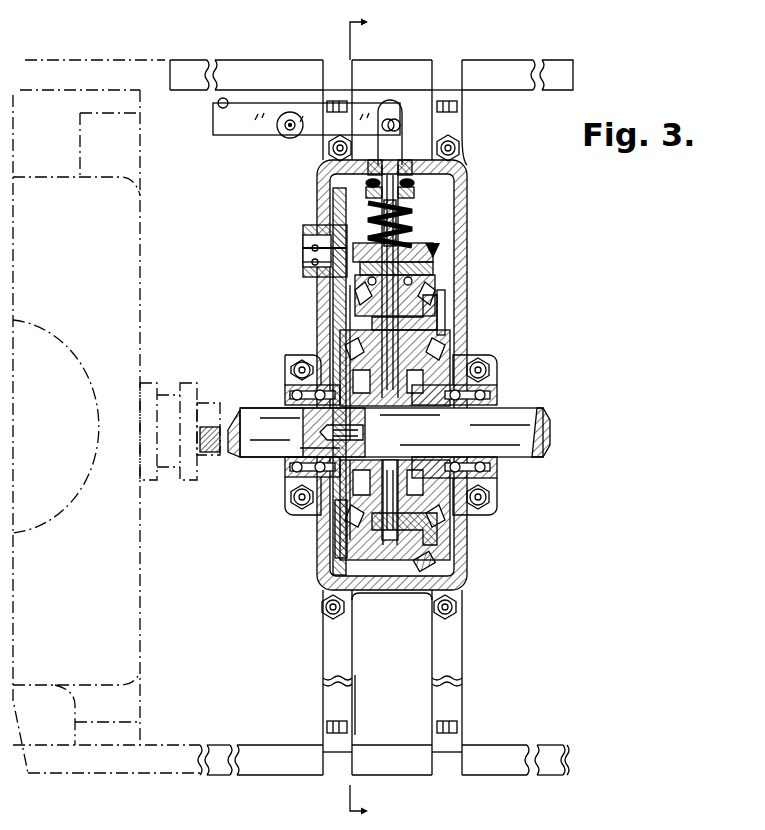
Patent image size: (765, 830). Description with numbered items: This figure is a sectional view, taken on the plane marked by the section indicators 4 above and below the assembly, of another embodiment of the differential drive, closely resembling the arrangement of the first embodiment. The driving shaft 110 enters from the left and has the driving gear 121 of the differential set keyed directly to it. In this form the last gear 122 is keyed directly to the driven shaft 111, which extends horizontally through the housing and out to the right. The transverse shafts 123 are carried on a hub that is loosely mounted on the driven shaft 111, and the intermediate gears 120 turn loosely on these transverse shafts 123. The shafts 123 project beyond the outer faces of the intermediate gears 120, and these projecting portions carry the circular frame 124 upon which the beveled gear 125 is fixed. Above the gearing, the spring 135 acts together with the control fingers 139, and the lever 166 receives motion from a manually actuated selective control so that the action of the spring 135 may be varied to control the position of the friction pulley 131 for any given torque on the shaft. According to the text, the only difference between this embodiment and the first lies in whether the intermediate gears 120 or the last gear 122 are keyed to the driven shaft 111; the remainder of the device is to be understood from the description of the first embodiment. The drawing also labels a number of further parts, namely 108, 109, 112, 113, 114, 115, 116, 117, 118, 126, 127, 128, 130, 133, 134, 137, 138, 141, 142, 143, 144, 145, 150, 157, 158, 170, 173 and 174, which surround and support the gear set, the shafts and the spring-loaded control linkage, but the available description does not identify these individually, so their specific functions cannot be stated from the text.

The section line 4- 4 is at (368, 418).
The machine frame 108 is at (136, 542).
The shaft end 109 is at (210, 455).
The driving shaft 110 is at (262, 458).
The driven shaft 111 is at (548, 432).
The ball bearing 112 is at (492, 397).
The gear housing 113 is at (495, 490).
The bolt 114 is at (499, 372).
The bracket 115 is at (455, 650).
The frame rail 116 is at (222, 84).
The ball bearing 117 is at (287, 398).
The bolt 118 is at (452, 107).
The intermediate gear 120 is at (313, 567).
The driving gear 121 is at (318, 513).
The last gear 122 is at (435, 518).
The transverse shaft 123 is at (423, 348).
The circular frame 124 is at (433, 556).
The beveled gear 125 is at (403, 312).
The bearing 126 is at (367, 528).
The coupling hub 127 is at (343, 357).
The bolt 128 is at (500, 478).
The plate 130 is at (338, 310).
The friction pulley 131 is at (428, 330).
The bearing 133 is at (427, 293).
The ball bearing 134 is at (413, 278).
The spring 135 is at (393, 210).
The collar 137 is at (397, 222).
The nut 138 is at (415, 193).
The control finger 139 is at (413, 183).
The collar 141 is at (400, 240).
The hub 142 is at (430, 253).
The clamp bracket 143 is at (312, 225).
The pin 144 is at (338, 248).
The pin 145 is at (335, 265).
The gland 150 is at (423, 166).
The slide plate 157 is at (360, 295).
The nut 158 is at (408, 162).
The lever 166 is at (397, 150).
The pivot 170 is at (229, 103).
The boss 173 is at (290, 135).
The link 174 is at (245, 125).